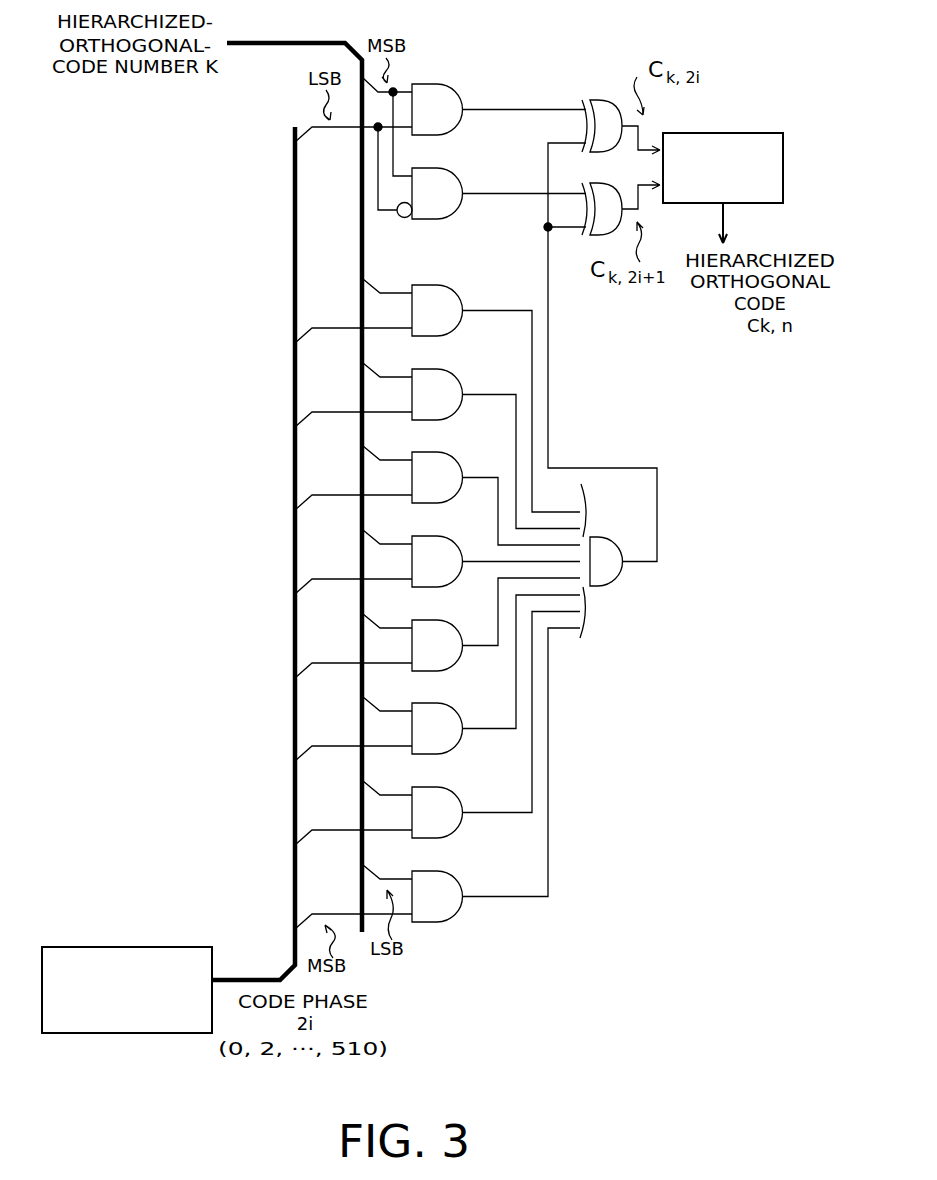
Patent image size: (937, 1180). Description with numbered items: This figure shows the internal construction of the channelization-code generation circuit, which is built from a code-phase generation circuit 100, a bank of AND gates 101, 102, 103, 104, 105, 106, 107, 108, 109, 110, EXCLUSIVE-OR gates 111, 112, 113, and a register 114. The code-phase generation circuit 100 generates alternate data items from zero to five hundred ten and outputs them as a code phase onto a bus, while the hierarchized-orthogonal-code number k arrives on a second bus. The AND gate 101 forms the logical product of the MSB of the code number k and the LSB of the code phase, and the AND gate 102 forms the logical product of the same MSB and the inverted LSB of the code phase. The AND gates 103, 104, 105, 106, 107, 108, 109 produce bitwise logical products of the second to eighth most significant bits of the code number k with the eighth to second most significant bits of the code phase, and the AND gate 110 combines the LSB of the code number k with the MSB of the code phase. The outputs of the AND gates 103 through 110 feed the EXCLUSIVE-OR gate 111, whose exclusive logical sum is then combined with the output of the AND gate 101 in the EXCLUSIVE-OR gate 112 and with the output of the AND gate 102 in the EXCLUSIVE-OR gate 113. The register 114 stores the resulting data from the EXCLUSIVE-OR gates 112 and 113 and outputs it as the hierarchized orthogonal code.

The code-phase generation circuit 100 is at (108, 948).
The AND gate 101 is at (420, 85).
The AND gate 102 is at (420, 169).
The AND gate 103 is at (420, 286).
The AND gate 104 is at (420, 370).
The AND gate 105 is at (420, 453).
The AND gate 106 is at (420, 537).
The AND gate 107 is at (420, 621).
The AND gate 108 is at (420, 704).
The AND gate 109 is at (420, 788).
The AND gate 110 is at (420, 872).
The EXCLUSIVE-OR gate 111 is at (598, 538).
The EXCLUSIVE-OR gate 112 is at (604, 105).
The EXCLUSIVE-OR gate 113 is at (604, 241).
The register 114 is at (680, 134).